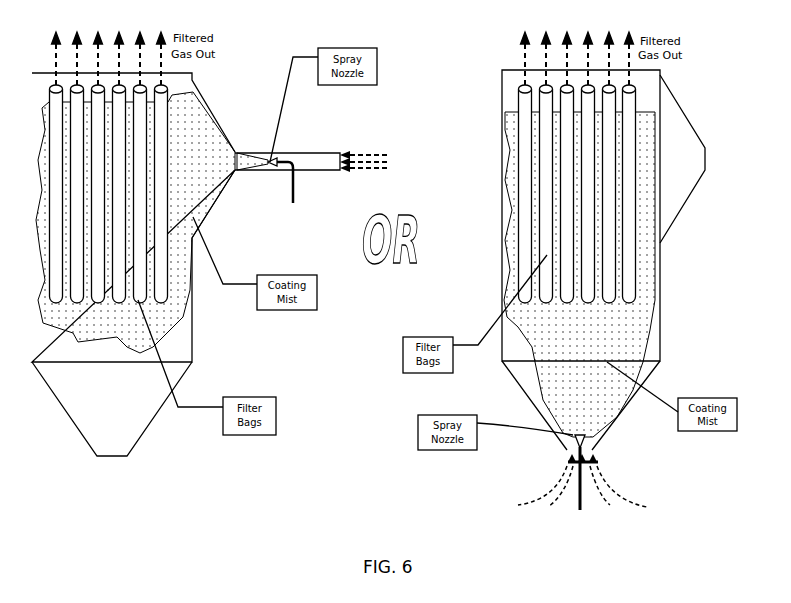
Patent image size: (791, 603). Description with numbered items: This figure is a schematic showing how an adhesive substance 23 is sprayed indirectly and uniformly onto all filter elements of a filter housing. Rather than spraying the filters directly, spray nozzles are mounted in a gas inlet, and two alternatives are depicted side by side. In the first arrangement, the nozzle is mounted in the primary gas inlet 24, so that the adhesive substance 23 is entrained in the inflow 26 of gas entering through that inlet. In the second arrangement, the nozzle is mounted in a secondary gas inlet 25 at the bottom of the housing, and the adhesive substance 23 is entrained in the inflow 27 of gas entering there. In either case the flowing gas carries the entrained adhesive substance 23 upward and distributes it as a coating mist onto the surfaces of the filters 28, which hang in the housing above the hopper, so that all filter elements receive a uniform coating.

The adhesive substance 23 is at (275, 173).
The primary gas inlet 24 is at (247, 173).
The inflow of gas 26 is at (372, 172).
The filters 28 is at (567, 193).
The secondary gas inlet 25 is at (610, 435).
The inflow of gas 27 is at (552, 495).